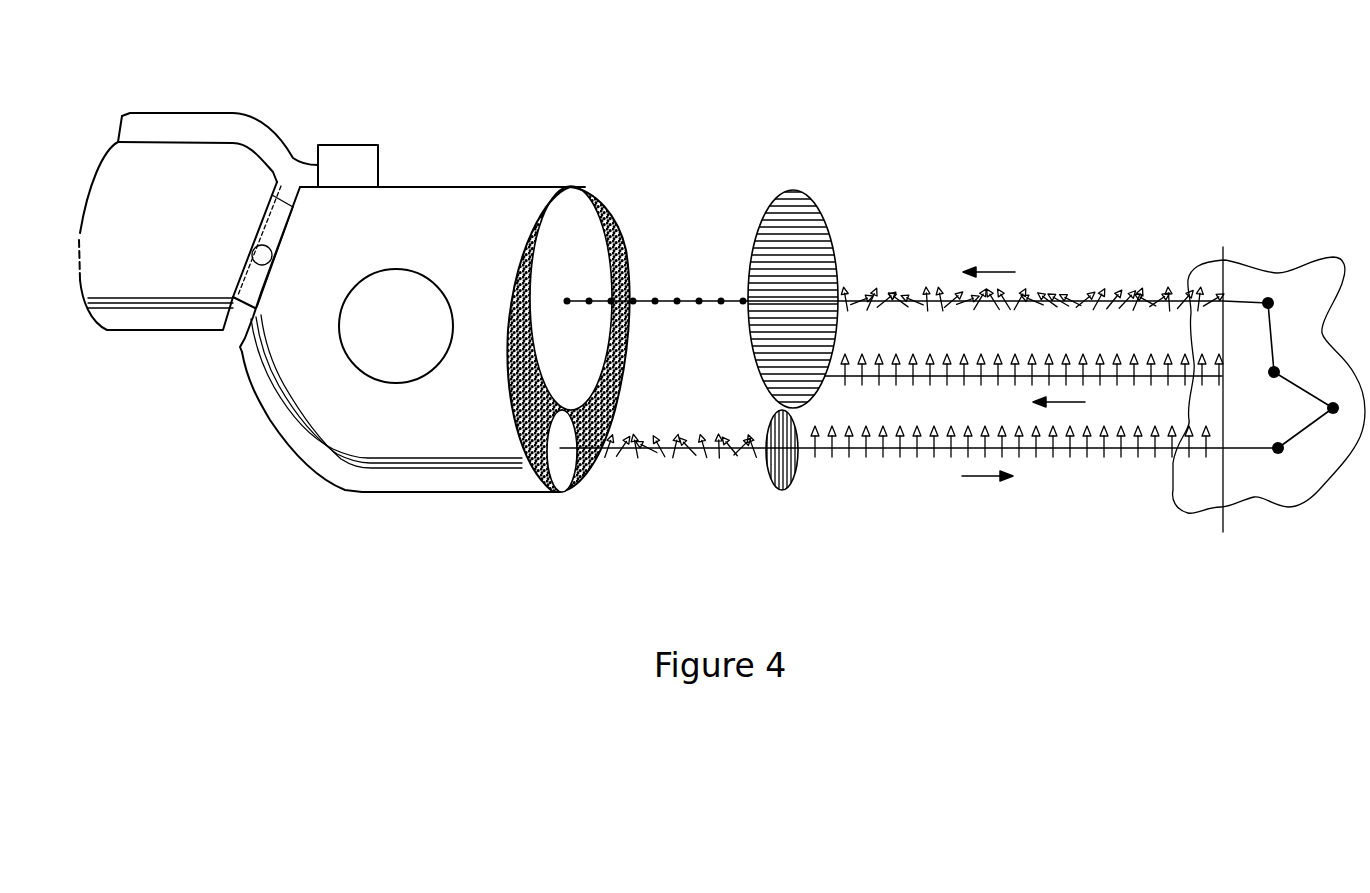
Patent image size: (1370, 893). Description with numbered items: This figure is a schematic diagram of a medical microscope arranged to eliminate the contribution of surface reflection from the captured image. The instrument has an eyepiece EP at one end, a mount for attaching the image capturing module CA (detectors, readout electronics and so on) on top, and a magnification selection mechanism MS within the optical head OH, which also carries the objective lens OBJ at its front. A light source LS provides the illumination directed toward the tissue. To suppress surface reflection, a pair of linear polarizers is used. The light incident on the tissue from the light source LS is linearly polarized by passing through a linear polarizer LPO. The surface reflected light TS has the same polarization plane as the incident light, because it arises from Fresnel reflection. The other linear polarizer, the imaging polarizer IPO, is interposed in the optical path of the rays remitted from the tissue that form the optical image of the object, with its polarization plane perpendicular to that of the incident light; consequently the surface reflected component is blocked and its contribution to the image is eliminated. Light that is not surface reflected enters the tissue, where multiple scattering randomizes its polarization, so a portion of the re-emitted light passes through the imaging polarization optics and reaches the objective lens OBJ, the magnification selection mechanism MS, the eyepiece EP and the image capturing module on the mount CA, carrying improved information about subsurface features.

The eyepiece EP is at (122, 116).
The mount for attaching the image capturing module CA is at (378, 152).
The objective lens OBJ is at (592, 188).
The imaging polarizer IPO is at (826, 237).
The linear polarizer LPO is at (788, 473).
The magnification selection mechanism MS is at (411, 360).
The optical head OH is at (280, 360).
The light source LS is at (583, 480).
The surface reflected light TS is at (1223, 513).